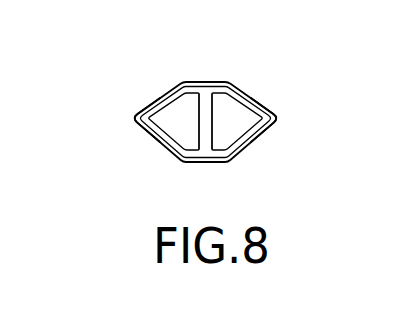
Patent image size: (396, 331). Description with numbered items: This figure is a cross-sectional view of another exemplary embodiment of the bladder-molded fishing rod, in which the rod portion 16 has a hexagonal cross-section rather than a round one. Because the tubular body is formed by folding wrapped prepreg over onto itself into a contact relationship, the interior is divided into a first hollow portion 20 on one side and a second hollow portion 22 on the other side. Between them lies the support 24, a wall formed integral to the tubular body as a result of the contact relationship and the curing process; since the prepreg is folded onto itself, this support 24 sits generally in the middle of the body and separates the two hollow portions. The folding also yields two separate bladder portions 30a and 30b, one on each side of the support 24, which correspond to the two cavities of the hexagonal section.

The rod portion 16 is at (275, 135).
The first hollow portion 20 is at (170, 122).
The second hollow portion 22 is at (228, 112).
The support 24 is at (205, 140).
The first bladder portion 30a is at (143, 114).
The second bladder portion 30b is at (270, 104).